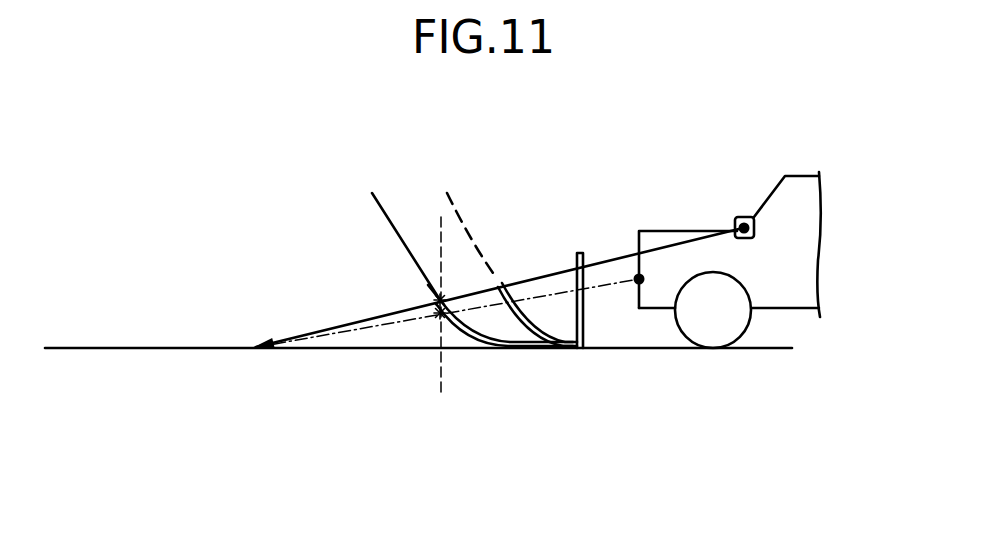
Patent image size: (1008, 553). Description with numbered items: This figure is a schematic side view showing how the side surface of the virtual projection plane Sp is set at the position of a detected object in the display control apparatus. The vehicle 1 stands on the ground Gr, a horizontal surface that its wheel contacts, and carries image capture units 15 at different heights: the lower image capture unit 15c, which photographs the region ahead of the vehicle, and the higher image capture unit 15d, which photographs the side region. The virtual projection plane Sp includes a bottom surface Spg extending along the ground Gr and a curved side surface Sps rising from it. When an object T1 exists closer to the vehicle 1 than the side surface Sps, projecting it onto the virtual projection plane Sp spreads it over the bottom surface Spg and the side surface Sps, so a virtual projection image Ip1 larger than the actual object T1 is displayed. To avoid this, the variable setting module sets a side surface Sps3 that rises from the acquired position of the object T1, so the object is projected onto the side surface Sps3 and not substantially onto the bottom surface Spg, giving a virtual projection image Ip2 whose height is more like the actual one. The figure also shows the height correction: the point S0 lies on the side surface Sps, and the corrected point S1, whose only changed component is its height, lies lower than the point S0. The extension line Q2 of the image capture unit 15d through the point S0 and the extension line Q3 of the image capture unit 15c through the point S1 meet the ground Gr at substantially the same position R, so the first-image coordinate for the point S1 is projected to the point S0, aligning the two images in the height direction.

The vehicle 1 is at (735, 272).
The image capture units 15 is at (686, 272).
The image capture unit (first image capture unit) 15c is at (635, 284).
The image capture unit (second image capture unit) 15d is at (744, 220).
The ground Gr is at (50, 348).
The position R is at (250, 350).
The extension line Q3 is at (338, 335).
The side surface Sps is at (387, 207).
The side surface Sps3 is at (495, 277).
The virtual projection plane Sp is at (765, 384).
The bottom surface Spg is at (757, 348).
The virtual projection image Ip1 is at (496, 327).
The virtual projection image Ip2 is at (565, 333).
The extension line Q2 is at (502, 283).
The object T1 is at (581, 253).
The point S0 is at (440, 300).
The point S1 is at (440, 317).